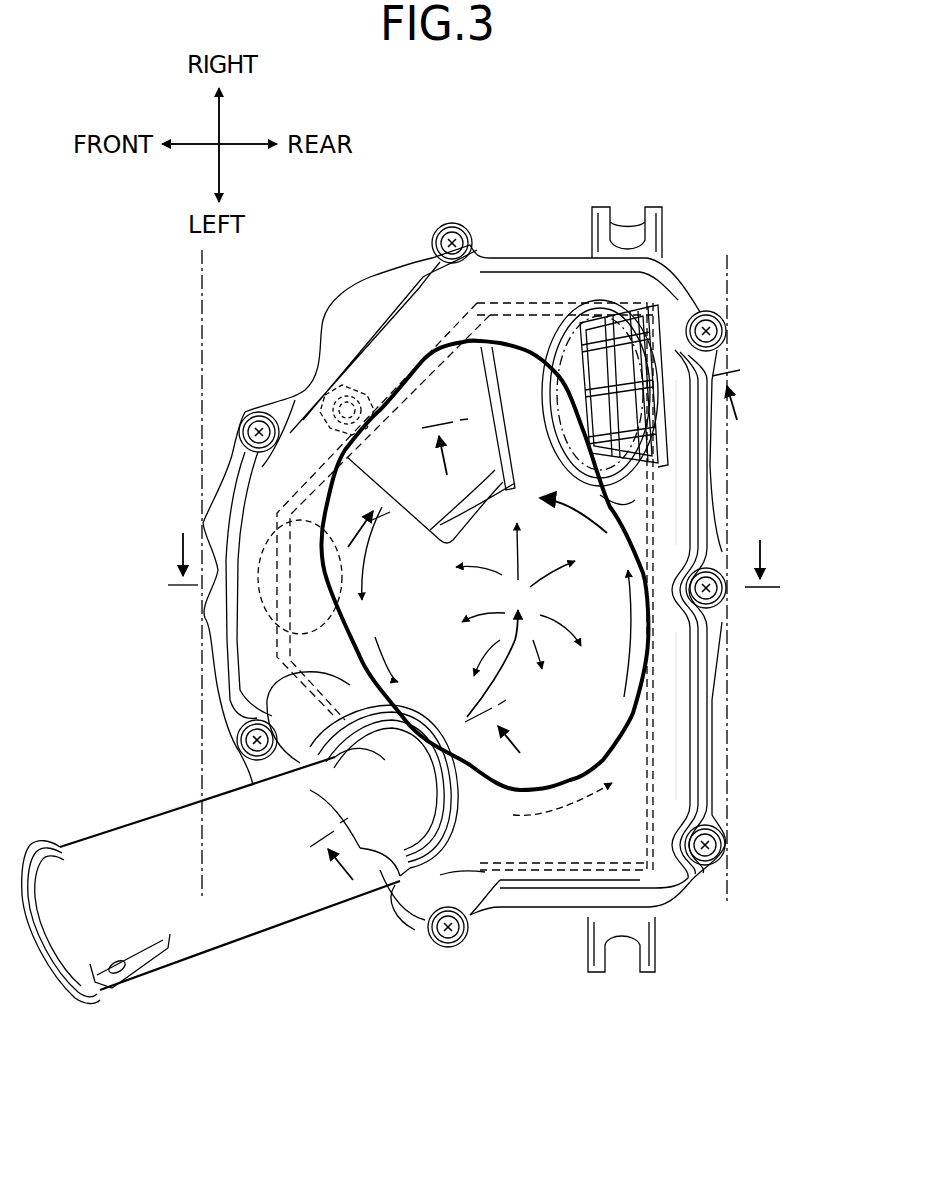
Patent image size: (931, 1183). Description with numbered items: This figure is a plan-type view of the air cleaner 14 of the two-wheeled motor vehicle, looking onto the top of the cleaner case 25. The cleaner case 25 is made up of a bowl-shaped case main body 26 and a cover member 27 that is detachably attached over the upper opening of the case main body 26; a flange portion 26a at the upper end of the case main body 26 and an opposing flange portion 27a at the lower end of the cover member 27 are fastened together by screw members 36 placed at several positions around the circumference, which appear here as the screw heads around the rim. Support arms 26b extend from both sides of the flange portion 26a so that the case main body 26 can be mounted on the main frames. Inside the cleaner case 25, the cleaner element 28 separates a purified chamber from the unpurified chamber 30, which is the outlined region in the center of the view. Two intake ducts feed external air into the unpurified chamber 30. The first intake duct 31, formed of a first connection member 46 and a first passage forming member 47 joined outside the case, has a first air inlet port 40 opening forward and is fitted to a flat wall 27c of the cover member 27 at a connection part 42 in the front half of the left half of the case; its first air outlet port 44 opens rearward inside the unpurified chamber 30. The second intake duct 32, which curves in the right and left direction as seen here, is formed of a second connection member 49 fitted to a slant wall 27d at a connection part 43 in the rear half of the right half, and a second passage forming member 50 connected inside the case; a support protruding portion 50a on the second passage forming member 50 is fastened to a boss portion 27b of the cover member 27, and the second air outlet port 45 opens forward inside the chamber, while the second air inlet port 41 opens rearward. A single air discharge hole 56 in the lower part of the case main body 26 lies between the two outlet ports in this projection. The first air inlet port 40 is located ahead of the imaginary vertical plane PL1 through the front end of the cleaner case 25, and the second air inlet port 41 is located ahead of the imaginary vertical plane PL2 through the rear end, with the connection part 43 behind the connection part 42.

The air cleaner 14 is at (340, 288).
The cleaner case 25 is at (122, 372).
The case main body 26 is at (313, 330).
The flange portion 26a is at (382, 290).
The support arm 26b is at (592, 240).
The cover member 27 is at (255, 515).
The flange portion 27a is at (688, 876).
The boss portion 27b is at (269, 456).
The flat wall 27c is at (337, 697).
The slant wall 27d is at (632, 500).
The cleaner element 28 is at (608, 700).
The unpurified chamber 30 is at (484, 578).
The first intake duct 31 is at (288, 930).
The second intake duct 32 is at (678, 362).
The screw member 36 is at (722, 333).
The first air inlet port 40 is at (33, 953).
The second air inlet port 41 is at (648, 337).
The connection part 42 is at (465, 868).
The connection part 43 is at (545, 297).
The first air outlet port 44 is at (440, 725).
The second air outlet port 45 is at (412, 520).
The first connection member 46 is at (433, 843).
The first passage forming member 47 is at (180, 828).
The second connection member 49 is at (638, 418).
The second passage forming member 50 is at (453, 377).
The support protruding portion 50a is at (367, 388).
The air discharge hole 56 is at (262, 603).
The imaginary vertical plane PL1 is at (200, 863).
The imaginary vertical plane PL2 is at (728, 769).